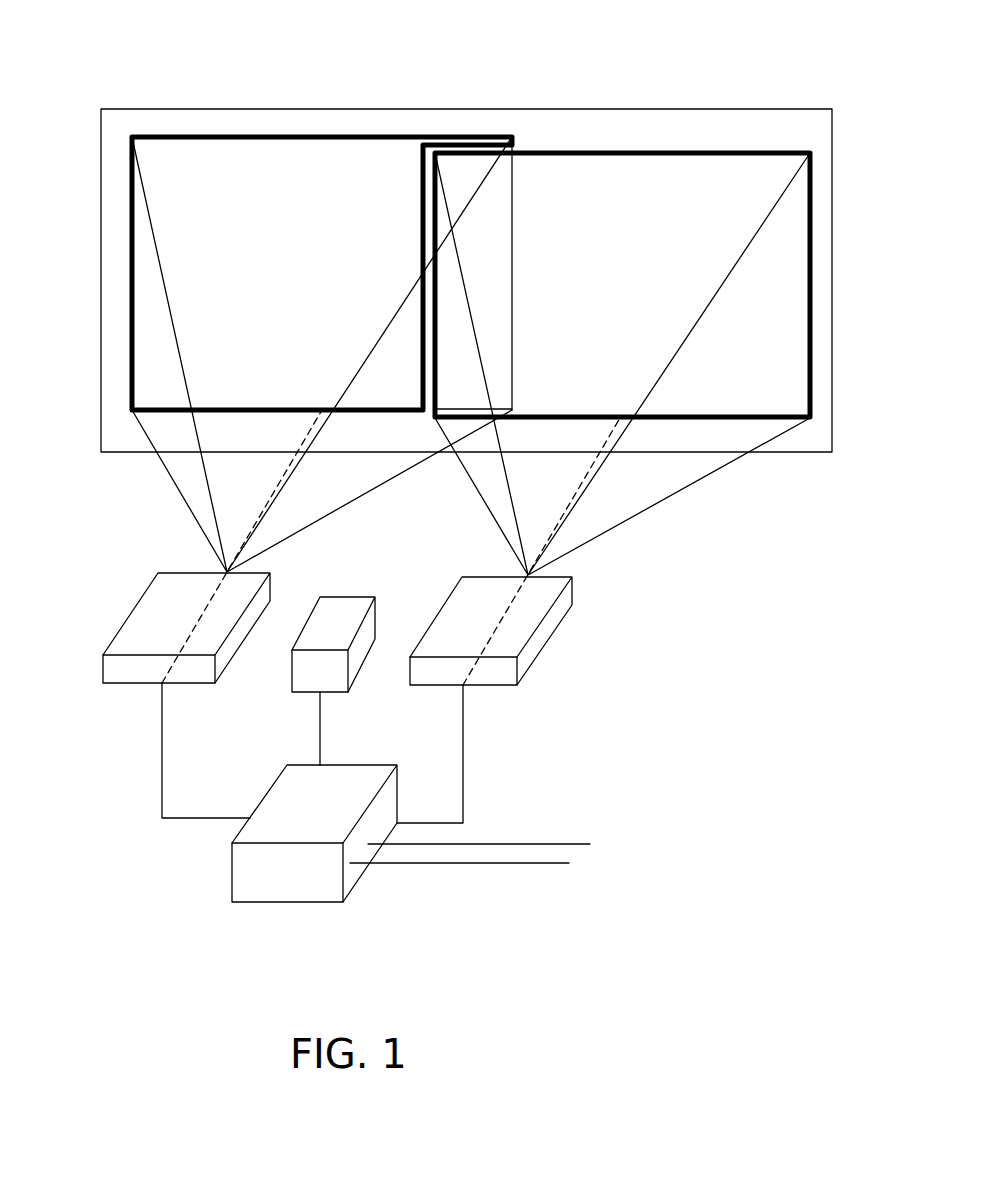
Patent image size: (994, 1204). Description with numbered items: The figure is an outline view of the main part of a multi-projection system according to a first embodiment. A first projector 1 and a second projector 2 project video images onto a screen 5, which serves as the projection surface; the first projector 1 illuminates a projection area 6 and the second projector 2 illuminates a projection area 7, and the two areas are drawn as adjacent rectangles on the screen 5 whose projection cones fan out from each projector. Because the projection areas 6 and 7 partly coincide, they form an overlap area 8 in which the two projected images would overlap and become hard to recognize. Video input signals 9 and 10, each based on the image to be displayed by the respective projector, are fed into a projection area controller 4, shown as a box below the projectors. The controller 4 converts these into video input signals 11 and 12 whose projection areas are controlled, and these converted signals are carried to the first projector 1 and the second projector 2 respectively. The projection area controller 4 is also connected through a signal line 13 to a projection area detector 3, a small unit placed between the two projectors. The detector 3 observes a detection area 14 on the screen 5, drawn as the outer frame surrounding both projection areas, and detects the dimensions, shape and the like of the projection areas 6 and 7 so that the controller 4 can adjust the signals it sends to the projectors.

The first projector 1 is at (157, 619).
The second projector 2 is at (537, 628).
The projection area detector 3 is at (338, 618).
The projection area controller 4 is at (255, 873).
The screen 5 is at (193, 78).
The projection area 6 is at (298, 218).
The projection area 7 is at (593, 215).
The overlap area 8 is at (473, 203).
The video input signal 9 is at (478, 844).
The video input signal 10 is at (538, 863).
The video input signal 11 is at (163, 742).
The video input signal 12 is at (465, 748).
The signal line 13 is at (320, 740).
The detection area 14 is at (149, 108).